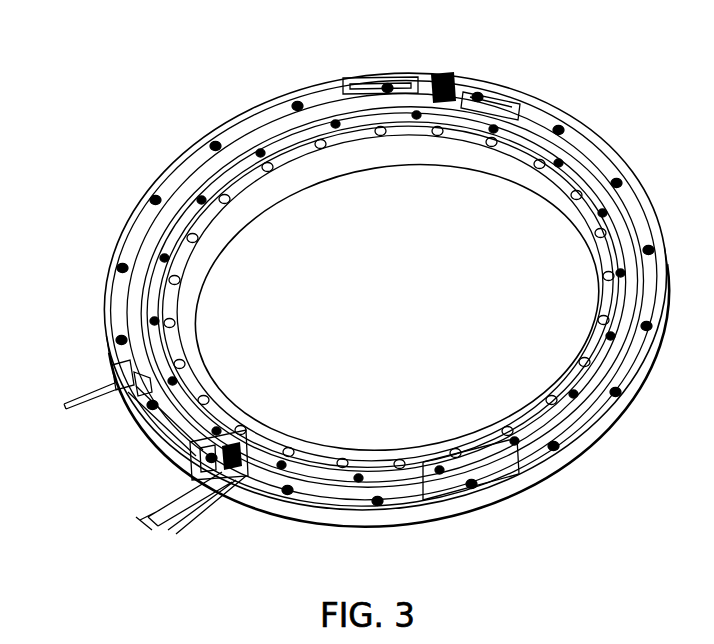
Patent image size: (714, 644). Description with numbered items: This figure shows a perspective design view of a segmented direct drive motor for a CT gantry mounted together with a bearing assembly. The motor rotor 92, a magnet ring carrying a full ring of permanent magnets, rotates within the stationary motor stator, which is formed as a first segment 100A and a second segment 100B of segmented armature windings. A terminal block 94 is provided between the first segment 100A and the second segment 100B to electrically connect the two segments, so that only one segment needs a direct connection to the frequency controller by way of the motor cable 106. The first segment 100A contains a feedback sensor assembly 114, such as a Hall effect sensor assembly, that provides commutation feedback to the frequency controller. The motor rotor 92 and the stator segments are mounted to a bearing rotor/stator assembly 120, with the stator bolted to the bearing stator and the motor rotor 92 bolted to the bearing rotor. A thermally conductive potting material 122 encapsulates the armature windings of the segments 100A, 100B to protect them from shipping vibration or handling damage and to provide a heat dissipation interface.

The motor rotor 92 is at (263, 183).
The terminal block 94 is at (449, 72).
The first segment 100A is at (128, 222).
The second segment 100B is at (579, 438).
The motor cable 106 is at (197, 518).
The feedback sensor assembly 114 is at (150, 377).
The bearing rotor/stator assembly 120 is at (240, 258).
The potting material 122 is at (130, 248).